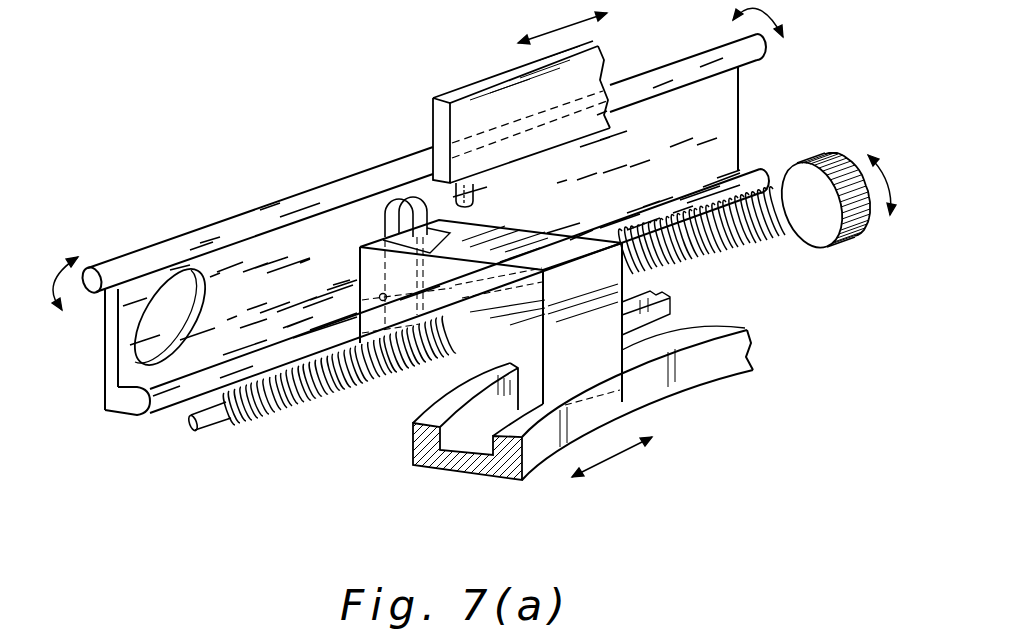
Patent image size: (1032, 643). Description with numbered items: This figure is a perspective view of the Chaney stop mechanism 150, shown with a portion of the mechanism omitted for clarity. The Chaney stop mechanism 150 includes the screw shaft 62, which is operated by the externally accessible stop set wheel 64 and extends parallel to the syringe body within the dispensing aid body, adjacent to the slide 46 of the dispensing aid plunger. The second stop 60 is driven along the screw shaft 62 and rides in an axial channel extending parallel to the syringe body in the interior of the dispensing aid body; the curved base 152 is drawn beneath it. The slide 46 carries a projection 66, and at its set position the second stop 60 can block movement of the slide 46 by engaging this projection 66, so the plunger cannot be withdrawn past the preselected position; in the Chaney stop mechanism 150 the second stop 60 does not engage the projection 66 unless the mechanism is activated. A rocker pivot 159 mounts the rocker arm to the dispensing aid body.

The rocker pivot 159 is at (250, 222).
The slide 46 is at (432, 120).
The projection 66 is at (474, 192).
The screw shaft 62 is at (727, 250).
The stop set wheel 64 is at (835, 243).
The second stop 60 is at (583, 347).
The arcuate track 152 is at (435, 467).
The Chaney stop mechanism 150 is at (622, 497).